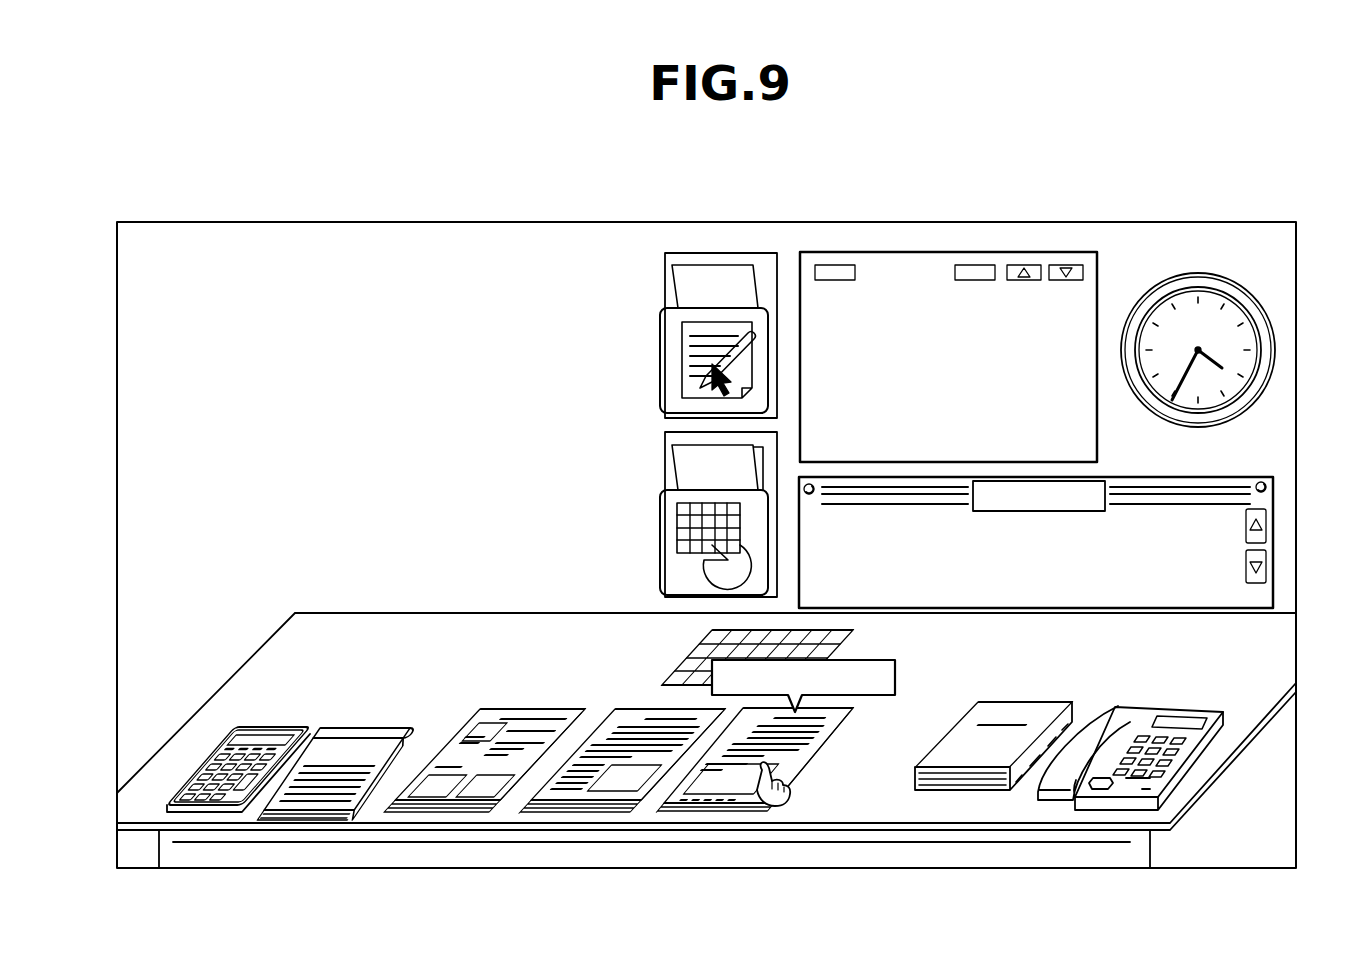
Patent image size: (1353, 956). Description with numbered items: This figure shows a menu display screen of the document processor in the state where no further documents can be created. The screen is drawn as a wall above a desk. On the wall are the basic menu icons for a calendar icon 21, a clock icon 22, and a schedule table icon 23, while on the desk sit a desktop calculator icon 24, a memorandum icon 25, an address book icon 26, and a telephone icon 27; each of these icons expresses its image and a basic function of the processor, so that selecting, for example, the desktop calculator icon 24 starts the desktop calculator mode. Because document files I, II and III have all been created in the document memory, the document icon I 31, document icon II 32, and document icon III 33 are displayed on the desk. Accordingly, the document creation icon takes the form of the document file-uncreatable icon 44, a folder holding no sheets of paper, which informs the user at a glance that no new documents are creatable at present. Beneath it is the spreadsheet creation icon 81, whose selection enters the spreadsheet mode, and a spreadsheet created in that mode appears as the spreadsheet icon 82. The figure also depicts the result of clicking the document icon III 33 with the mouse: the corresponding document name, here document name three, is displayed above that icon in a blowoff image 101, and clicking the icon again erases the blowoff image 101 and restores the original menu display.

The calendar icon 21 is at (937, 250).
The clock icon 22 is at (1276, 303).
The schedule table icon 23 is at (1275, 507).
The desktop calculator icon 24 is at (265, 725).
The memorandum icon 25 is at (366, 725).
The address book icon 26 is at (1022, 702).
The telephone icon 27 is at (1152, 707).
The document icon I 31 is at (496, 708).
The document icon II 32 is at (614, 706).
The document icon III 33 is at (862, 718).
The document file-uncreatable icon 44 is at (690, 252).
The spreadsheet creation icon 81 is at (672, 462).
The spreadsheet icon 82 is at (698, 650).
The blowoff image 101 is at (872, 660).